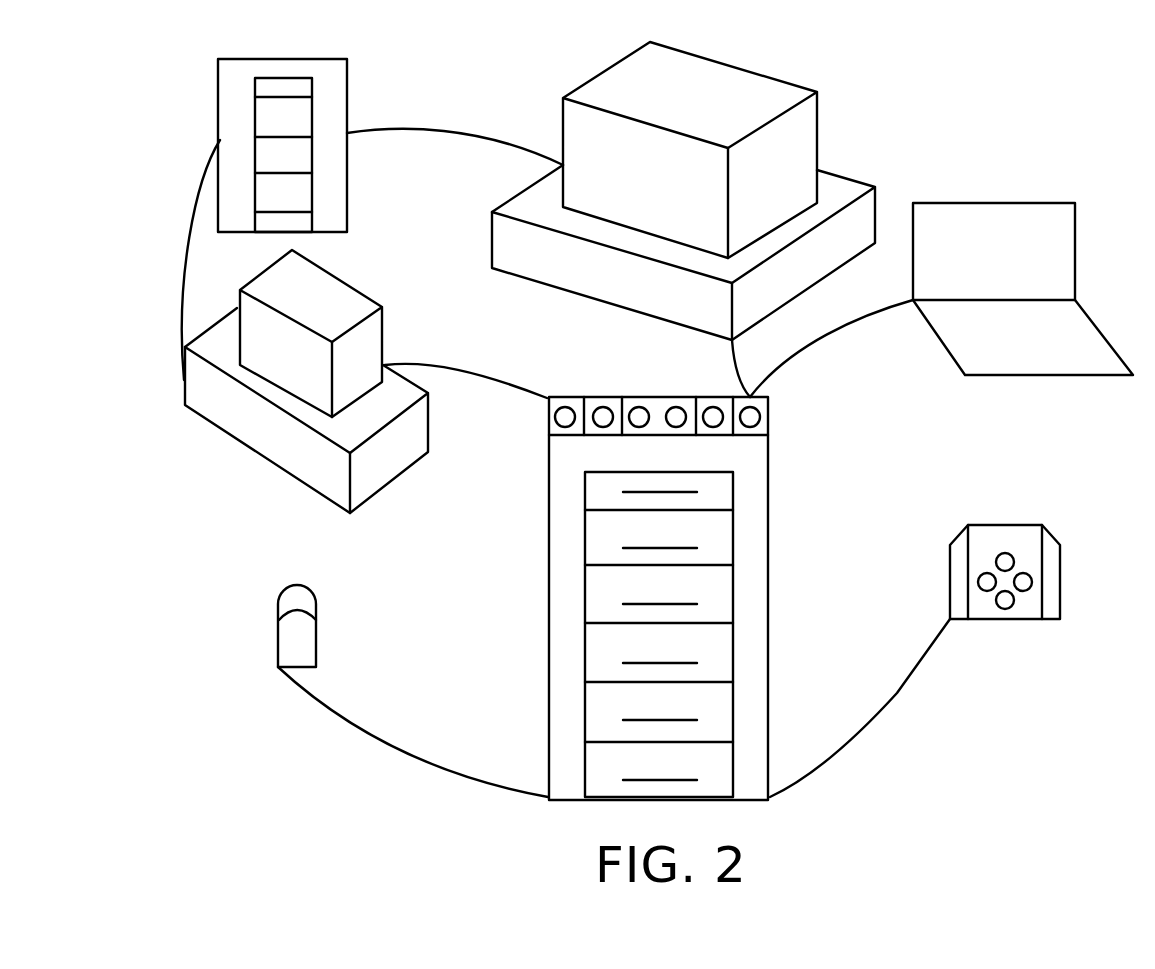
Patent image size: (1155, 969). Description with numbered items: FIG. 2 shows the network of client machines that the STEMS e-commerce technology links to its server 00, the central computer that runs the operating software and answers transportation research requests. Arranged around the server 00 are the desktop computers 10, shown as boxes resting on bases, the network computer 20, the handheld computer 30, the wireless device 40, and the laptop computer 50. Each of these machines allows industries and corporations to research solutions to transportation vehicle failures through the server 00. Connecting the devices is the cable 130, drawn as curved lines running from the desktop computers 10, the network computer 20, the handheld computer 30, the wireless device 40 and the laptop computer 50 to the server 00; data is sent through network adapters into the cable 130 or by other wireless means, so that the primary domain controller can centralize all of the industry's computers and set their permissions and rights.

The server 00 is at (768, 507).
The desktop computer 10 is at (385, 365).
The network computer 20 is at (347, 100).
The handheld computer 30 is at (1023, 620).
The wireless device 40 is at (317, 643).
The laptop computer 50 is at (975, 203).
The cable 130 is at (493, 137).